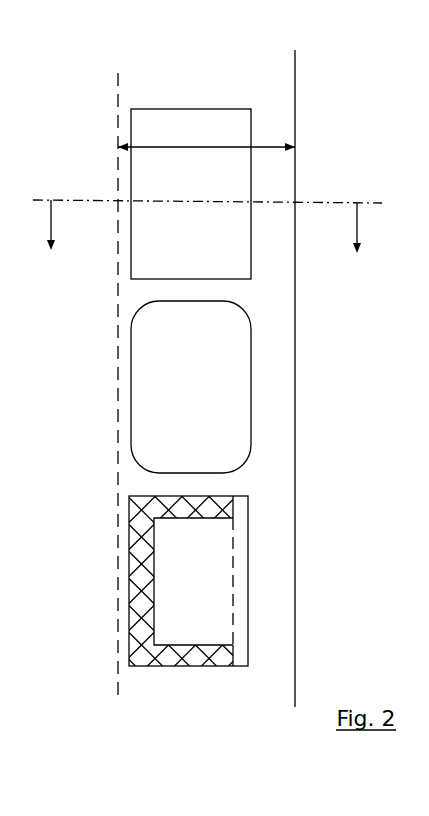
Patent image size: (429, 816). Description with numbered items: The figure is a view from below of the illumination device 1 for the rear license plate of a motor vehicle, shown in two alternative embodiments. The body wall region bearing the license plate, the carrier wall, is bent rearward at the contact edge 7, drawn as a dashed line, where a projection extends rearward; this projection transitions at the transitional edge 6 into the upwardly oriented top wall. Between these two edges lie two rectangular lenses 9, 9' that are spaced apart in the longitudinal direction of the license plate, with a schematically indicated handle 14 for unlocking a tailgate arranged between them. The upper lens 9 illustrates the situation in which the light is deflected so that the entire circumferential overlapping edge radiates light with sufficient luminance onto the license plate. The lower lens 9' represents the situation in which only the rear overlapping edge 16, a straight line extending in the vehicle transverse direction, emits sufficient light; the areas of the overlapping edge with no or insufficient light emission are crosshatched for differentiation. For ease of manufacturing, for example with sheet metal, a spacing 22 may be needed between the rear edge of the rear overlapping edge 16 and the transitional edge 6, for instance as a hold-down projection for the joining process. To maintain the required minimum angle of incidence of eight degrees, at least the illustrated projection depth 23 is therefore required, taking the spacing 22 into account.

The illumination device 1 is at (212, 371).
The transitional edge 6 is at (295, 423).
The contact edge 7 is at (117, 418).
The lens 9 is at (150, 194).
The lens 9' is at (139, 581).
The handle 14 is at (147, 357).
The rear overlapping edge 16 is at (240, 540).
The spacing 22 is at (275, 332).
The projection depth 23 is at (202, 147).